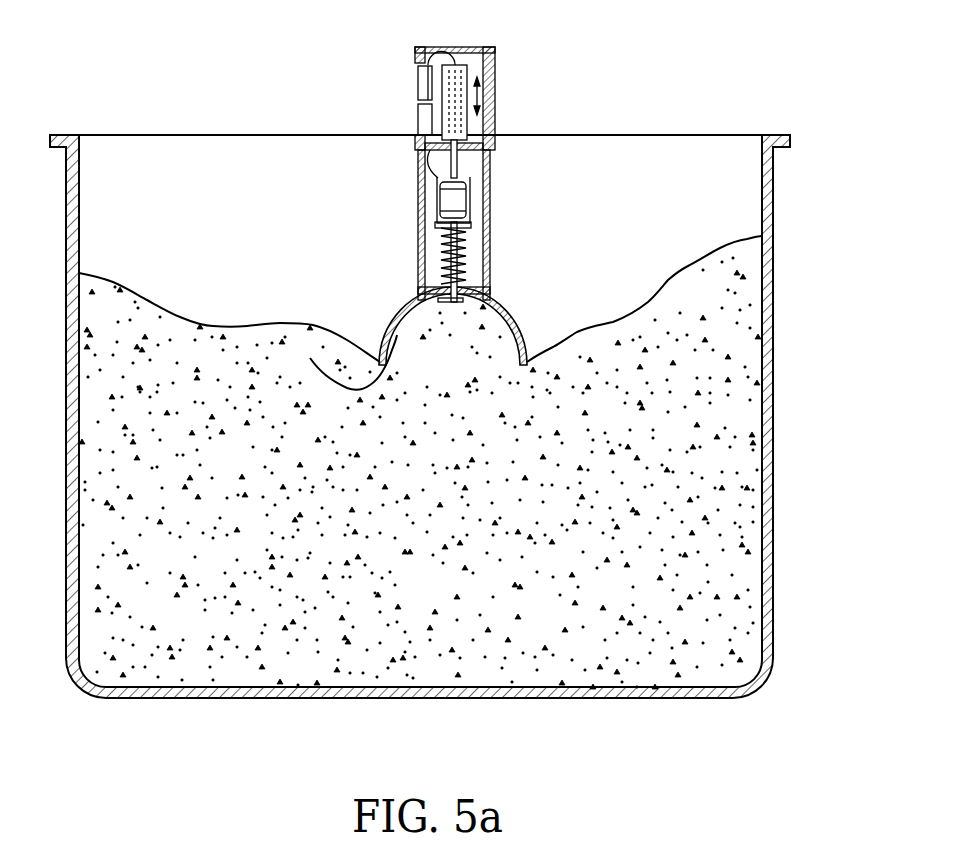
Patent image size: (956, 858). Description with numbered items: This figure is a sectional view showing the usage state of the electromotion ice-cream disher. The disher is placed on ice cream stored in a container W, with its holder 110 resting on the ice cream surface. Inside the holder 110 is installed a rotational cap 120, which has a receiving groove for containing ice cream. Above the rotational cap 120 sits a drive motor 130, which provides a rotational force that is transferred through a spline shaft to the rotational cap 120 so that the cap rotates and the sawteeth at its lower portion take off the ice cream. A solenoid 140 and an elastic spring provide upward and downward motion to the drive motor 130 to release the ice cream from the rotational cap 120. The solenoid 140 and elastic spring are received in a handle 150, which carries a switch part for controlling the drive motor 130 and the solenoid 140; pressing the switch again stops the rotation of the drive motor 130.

The holder 110 is at (390, 312).
The rotational cap 120 is at (310, 358).
The drive motor 130 is at (443, 200).
The solenoid 140 is at (443, 128).
The handle 150 is at (495, 83).
The container W is at (773, 300).